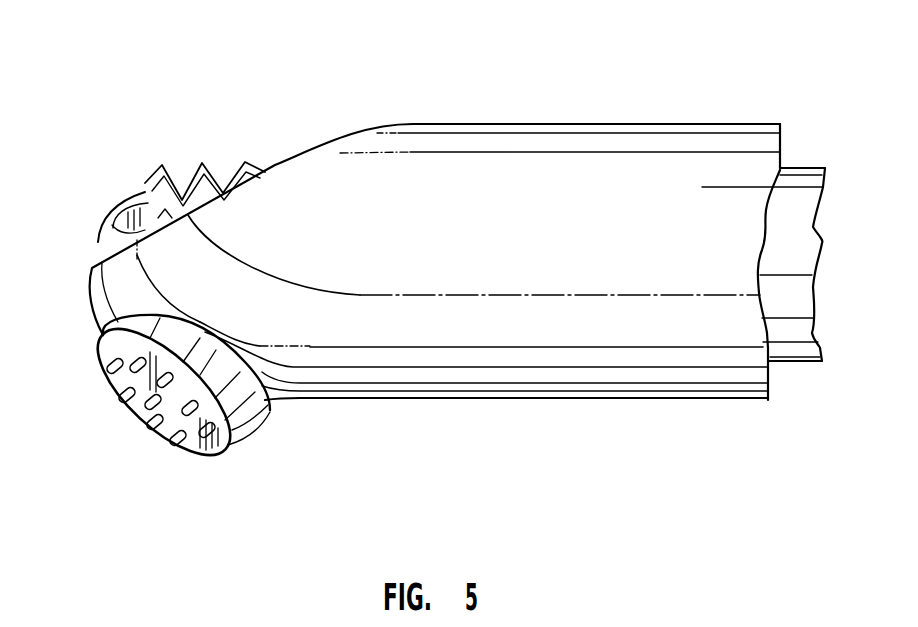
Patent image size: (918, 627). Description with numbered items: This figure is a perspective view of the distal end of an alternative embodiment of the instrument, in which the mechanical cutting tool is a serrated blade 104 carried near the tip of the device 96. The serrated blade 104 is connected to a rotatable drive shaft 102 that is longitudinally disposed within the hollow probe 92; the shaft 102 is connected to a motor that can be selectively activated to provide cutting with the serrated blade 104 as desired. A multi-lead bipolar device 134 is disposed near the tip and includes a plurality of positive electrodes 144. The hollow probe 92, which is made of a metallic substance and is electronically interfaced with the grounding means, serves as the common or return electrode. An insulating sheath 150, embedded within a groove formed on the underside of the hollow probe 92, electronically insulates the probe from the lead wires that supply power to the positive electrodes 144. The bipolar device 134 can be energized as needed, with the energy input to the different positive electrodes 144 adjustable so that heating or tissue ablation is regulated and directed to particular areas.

The hollow probe 92 is at (468, 147).
The nozzle tip 96 is at (347, 95).
The shaft 102 is at (792, 264).
The serrated blade 104 is at (138, 186).
The bipolar device 134 is at (186, 495).
The positive electrodes 144 is at (121, 401).
The insulating sheath 150 is at (448, 373).